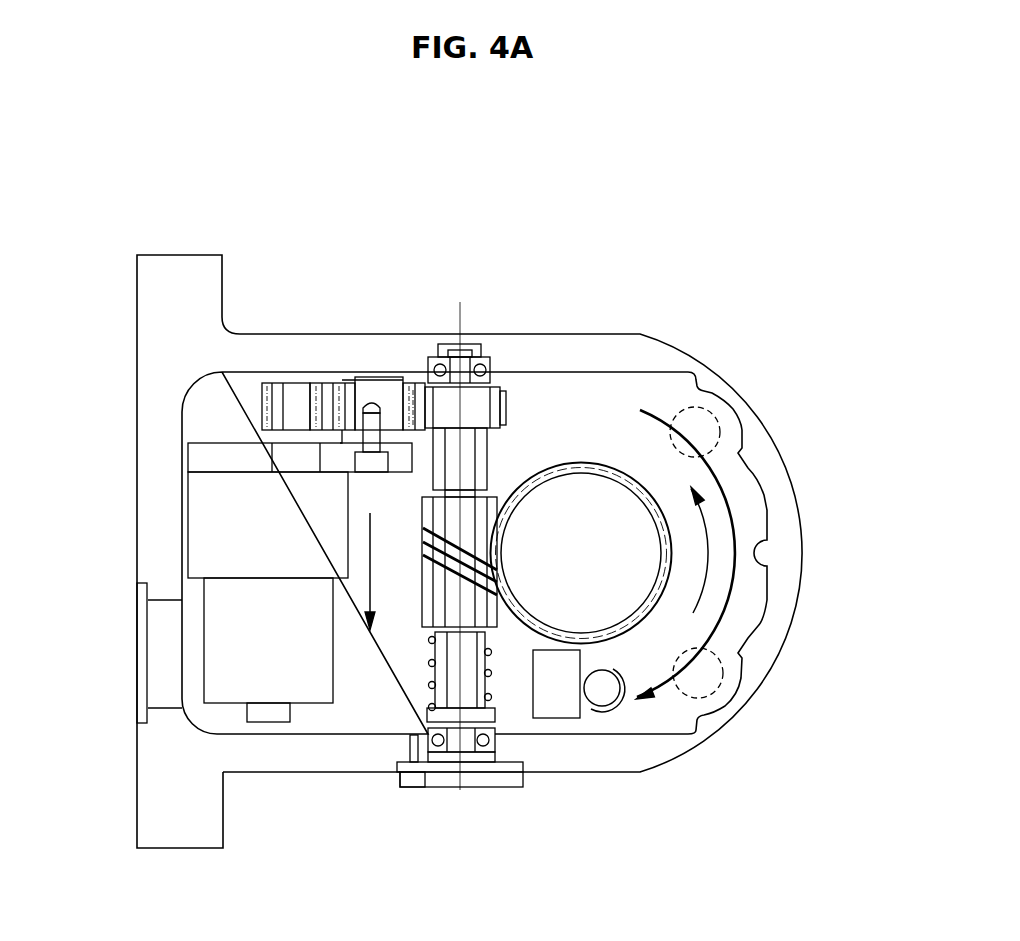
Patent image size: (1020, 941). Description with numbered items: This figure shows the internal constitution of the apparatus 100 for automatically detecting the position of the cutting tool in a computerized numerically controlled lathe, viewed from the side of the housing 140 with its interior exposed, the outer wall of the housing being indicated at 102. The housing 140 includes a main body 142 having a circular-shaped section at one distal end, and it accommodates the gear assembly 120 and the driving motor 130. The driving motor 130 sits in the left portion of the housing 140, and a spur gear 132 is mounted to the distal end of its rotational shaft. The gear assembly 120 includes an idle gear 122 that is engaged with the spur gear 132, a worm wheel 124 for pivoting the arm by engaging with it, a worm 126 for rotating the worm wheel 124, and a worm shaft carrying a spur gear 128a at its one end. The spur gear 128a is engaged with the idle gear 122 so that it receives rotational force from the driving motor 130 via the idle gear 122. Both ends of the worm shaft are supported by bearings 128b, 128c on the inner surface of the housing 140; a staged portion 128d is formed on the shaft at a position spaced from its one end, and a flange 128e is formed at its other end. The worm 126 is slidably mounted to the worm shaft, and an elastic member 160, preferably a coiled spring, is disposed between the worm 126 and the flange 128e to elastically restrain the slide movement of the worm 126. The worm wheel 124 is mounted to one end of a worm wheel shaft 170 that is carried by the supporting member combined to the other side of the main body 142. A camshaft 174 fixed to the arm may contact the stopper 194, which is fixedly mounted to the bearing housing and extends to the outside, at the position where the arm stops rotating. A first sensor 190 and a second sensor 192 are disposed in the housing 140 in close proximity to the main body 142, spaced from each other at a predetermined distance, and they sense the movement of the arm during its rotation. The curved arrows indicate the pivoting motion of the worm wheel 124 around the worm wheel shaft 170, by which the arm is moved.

The apparatus for automatically detecting the position of the cutting tool 100 is at (398, 116).
The housing 102 is at (393, 333).
The gear assembly 120 is at (528, 460).
The idle gear 122 is at (348, 390).
The worm wheel 124 is at (600, 470).
The worm 126 is at (496, 624).
The spur gear 128a is at (510, 400).
The bearing 128b is at (482, 352).
The bearing 128c is at (472, 752).
The staged portion 128d is at (422, 497).
The flange 128e is at (488, 715).
The driving motor 130 is at (217, 643).
The spur gear 132 is at (278, 388).
The housing 140 is at (328, 774).
The main body 142 is at (258, 763).
The elastic member 160 is at (428, 633).
The worm wheel shaft 170 is at (634, 547).
The camshaft 174 is at (620, 697).
The first sensor 190 is at (710, 678).
The second sensor 192 is at (722, 417).
The stopper 194 is at (603, 700).